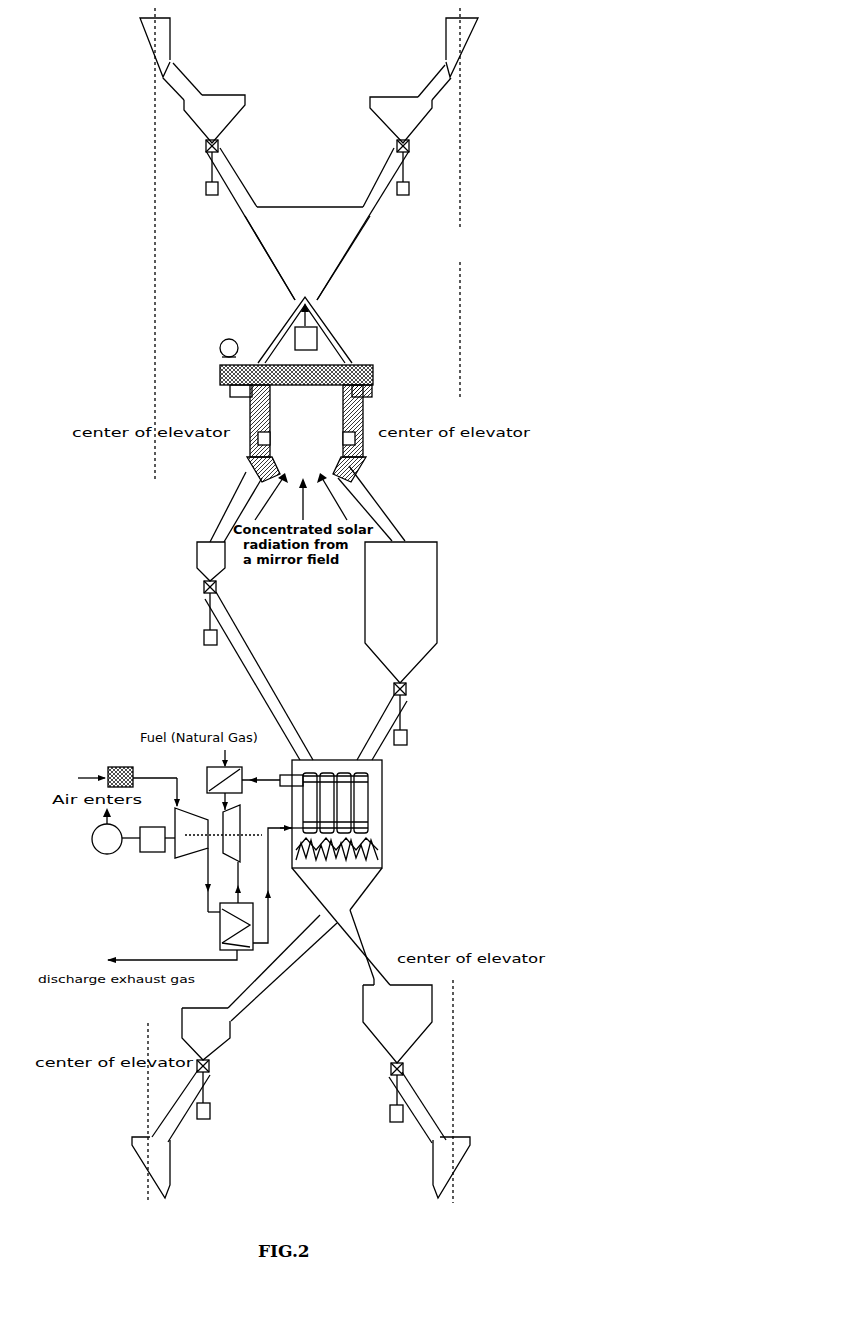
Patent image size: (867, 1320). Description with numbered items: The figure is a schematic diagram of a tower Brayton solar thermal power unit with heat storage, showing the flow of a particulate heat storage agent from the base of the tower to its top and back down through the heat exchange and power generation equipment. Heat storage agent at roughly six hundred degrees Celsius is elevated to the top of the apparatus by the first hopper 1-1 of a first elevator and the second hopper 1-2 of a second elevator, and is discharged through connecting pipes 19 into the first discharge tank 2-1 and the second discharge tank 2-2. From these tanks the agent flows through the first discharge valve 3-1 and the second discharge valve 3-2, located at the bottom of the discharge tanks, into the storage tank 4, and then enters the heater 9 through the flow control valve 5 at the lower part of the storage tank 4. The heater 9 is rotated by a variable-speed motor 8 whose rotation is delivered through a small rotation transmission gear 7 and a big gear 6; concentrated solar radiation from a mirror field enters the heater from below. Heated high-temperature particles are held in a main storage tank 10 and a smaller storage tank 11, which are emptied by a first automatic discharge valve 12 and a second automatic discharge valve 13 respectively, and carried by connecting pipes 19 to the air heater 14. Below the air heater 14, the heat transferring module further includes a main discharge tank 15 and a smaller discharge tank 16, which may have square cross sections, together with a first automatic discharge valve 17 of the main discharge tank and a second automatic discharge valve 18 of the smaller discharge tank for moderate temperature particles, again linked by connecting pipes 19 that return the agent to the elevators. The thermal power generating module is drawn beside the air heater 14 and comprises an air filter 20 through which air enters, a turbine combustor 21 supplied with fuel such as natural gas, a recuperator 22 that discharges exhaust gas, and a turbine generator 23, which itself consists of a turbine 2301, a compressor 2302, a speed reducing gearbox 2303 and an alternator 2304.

The first hopper 1-1 is at (457, 30).
The second hopper 1-2 is at (162, 36).
The first discharge tank 2-1 is at (401, 120).
The second discharge tank 2-2 is at (214, 119).
The first discharge valve 3-1 is at (410, 195).
The second discharge valve 3-2 is at (210, 195).
The storage tank 4 is at (307, 253).
The flow control valve 5 is at (328, 330).
The big gear 6 is at (368, 363).
The small rotation transmission gear 7 is at (222, 362).
The variable-speed motor 8 is at (238, 334).
The heater 9 is at (306, 433).
The main storage tank 10 is at (401, 612).
The smaller storage tank 11 is at (211, 561).
The first automatic discharge valve 12 is at (411, 714).
The second automatic discharge valve 13 is at (202, 613).
The air heater 14 is at (343, 841).
The main discharge tank 15 is at (397, 1024).
The smaller discharge tank 16 is at (206, 1034).
The first automatic discharge valve 17 is at (386, 1092).
The second automatic discharge valve 18 is at (213, 1089).
The connecting pipes 19 is at (186, 68).
The air filter 20 is at (129, 780).
The turbine combustor 21 is at (241, 779).
The recuperator 22 is at (199, 894).
The turbine generator 23 is at (161, 842).
The turbine 2301 is at (232, 858).
The compressor 2302 is at (190, 855).
The speed reducing gearbox 2303 is at (148, 855).
The alternator 2304 is at (100, 852).